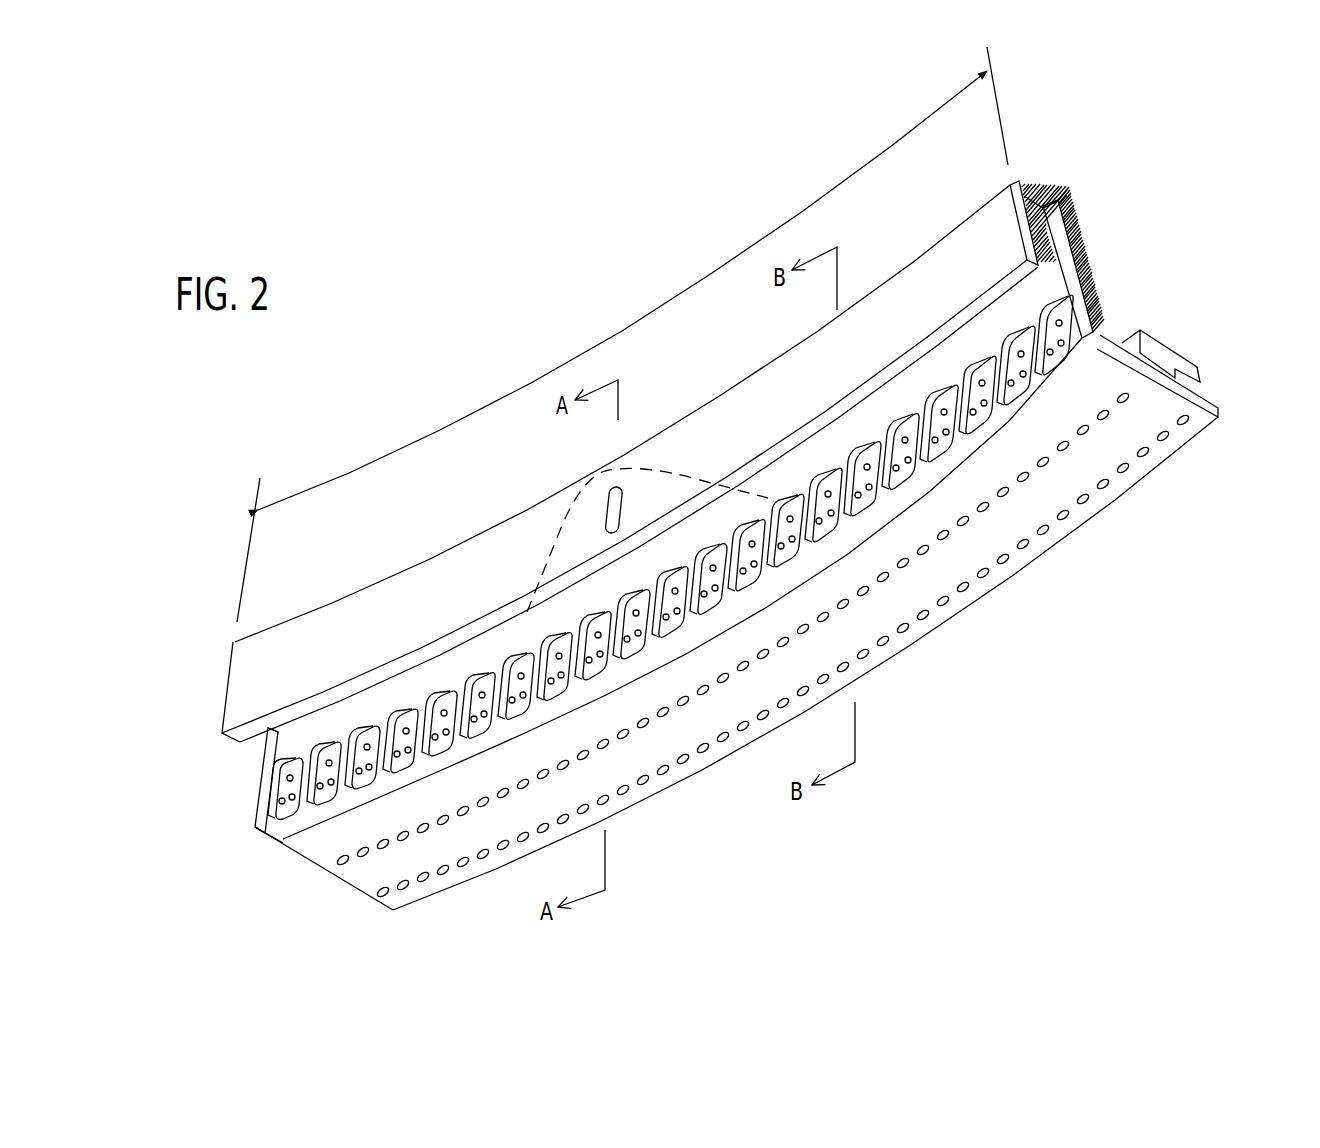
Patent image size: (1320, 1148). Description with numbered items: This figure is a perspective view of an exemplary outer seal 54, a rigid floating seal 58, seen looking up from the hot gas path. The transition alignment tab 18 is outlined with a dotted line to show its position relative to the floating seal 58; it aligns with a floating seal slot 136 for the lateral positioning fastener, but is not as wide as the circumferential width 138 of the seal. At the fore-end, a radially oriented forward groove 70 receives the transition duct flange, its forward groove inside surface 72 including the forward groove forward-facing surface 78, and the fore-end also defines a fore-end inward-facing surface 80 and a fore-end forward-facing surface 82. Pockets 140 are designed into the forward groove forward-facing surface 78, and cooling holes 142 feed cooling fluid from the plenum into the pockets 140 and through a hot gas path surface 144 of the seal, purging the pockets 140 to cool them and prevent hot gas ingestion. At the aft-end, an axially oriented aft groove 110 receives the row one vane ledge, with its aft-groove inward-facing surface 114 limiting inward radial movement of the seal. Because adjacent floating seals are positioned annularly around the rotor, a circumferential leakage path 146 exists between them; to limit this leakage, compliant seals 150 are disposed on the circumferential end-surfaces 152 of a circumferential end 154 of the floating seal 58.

The circumferential width 138 is at (638, 317).
The outer seal 54 is at (622, 334).
The floating seal 58 is at (447, 520).
The fore-end forward-facing surface 82 is at (789, 413).
The fore-end inward-facing surface 80 is at (982, 307).
The circumferential leakage path 146 is at (208, 655).
The circumferential end-surfaces 152 is at (227, 682).
The compliant seals 150 is at (1030, 244).
The circumferential end 154 is at (195, 733).
The forward groove 70 is at (257, 747).
The floating seal slot 136 is at (607, 512).
The transition alignment tab 18 is at (553, 547).
The forward groove inside surface 72 is at (682, 588).
The forward groove forward-facing surface 78 is at (487, 653).
The pockets 140 is at (463, 678).
The cooling holes 142 is at (951, 388).
The hot gas path surface 144 is at (963, 557).
The aft-groove inward-facing surface 114 is at (1199, 380).
The aft groove 110 is at (1220, 390).